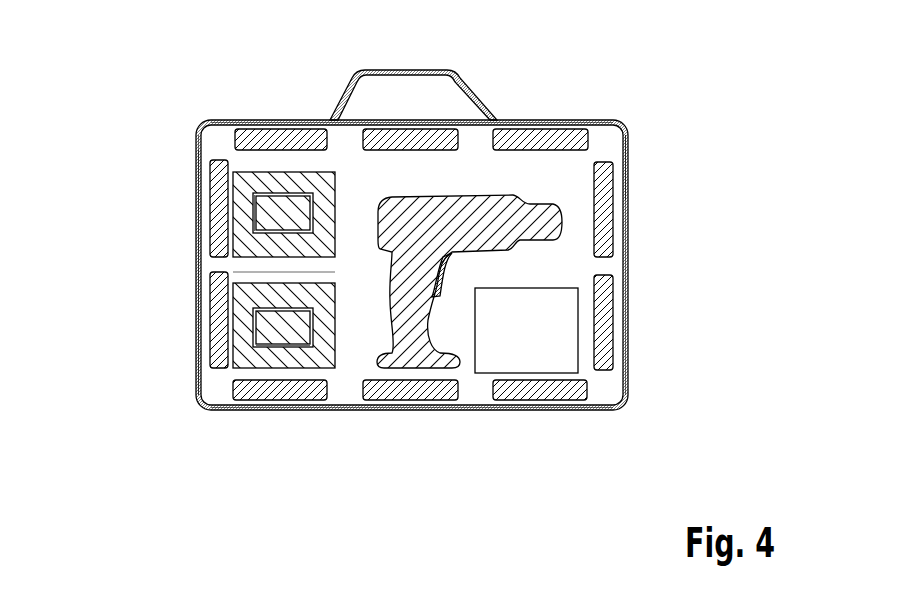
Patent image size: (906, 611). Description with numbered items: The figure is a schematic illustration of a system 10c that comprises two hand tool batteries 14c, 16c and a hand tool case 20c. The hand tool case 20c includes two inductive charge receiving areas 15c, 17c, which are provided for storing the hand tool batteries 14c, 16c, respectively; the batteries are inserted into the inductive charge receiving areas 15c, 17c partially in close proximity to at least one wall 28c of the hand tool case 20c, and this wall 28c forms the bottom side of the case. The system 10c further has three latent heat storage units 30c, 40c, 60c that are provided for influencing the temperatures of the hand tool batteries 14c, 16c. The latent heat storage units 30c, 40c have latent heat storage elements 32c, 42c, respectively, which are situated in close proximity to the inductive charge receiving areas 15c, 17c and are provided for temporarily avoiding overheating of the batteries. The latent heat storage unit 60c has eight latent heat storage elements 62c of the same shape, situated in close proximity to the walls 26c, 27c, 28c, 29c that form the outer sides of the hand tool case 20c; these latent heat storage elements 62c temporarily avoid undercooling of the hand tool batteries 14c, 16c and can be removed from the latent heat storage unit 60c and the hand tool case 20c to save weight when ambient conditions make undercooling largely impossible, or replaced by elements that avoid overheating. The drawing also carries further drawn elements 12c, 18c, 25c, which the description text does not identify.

The system 10c is at (165, 81).
The accessory compartment 12c is at (555, 344).
The hand tool battery 14c is at (263, 223).
The inductive charge receiving area 15c is at (245, 214).
The hand tool battery 16c is at (263, 332).
The inductive charge receiving area 17c is at (280, 358).
The power tool 18c is at (540, 220).
The hand tool case 20c is at (560, 110).
The partition wall 25c is at (232, 270).
The wall 26c is at (460, 122).
The wall 27c is at (196, 150).
The wall 28c is at (478, 420).
The wall 29c is at (640, 334).
The latent heat storage unit 30c is at (128, 232).
The latent heat storage element 32c is at (288, 183).
The latent heat storage unit 40c is at (178, 385).
The latent heat storage element 42c is at (247, 360).
The latent heat storage unit 60c is at (688, 113).
The latent heat storage element 62c is at (217, 168).